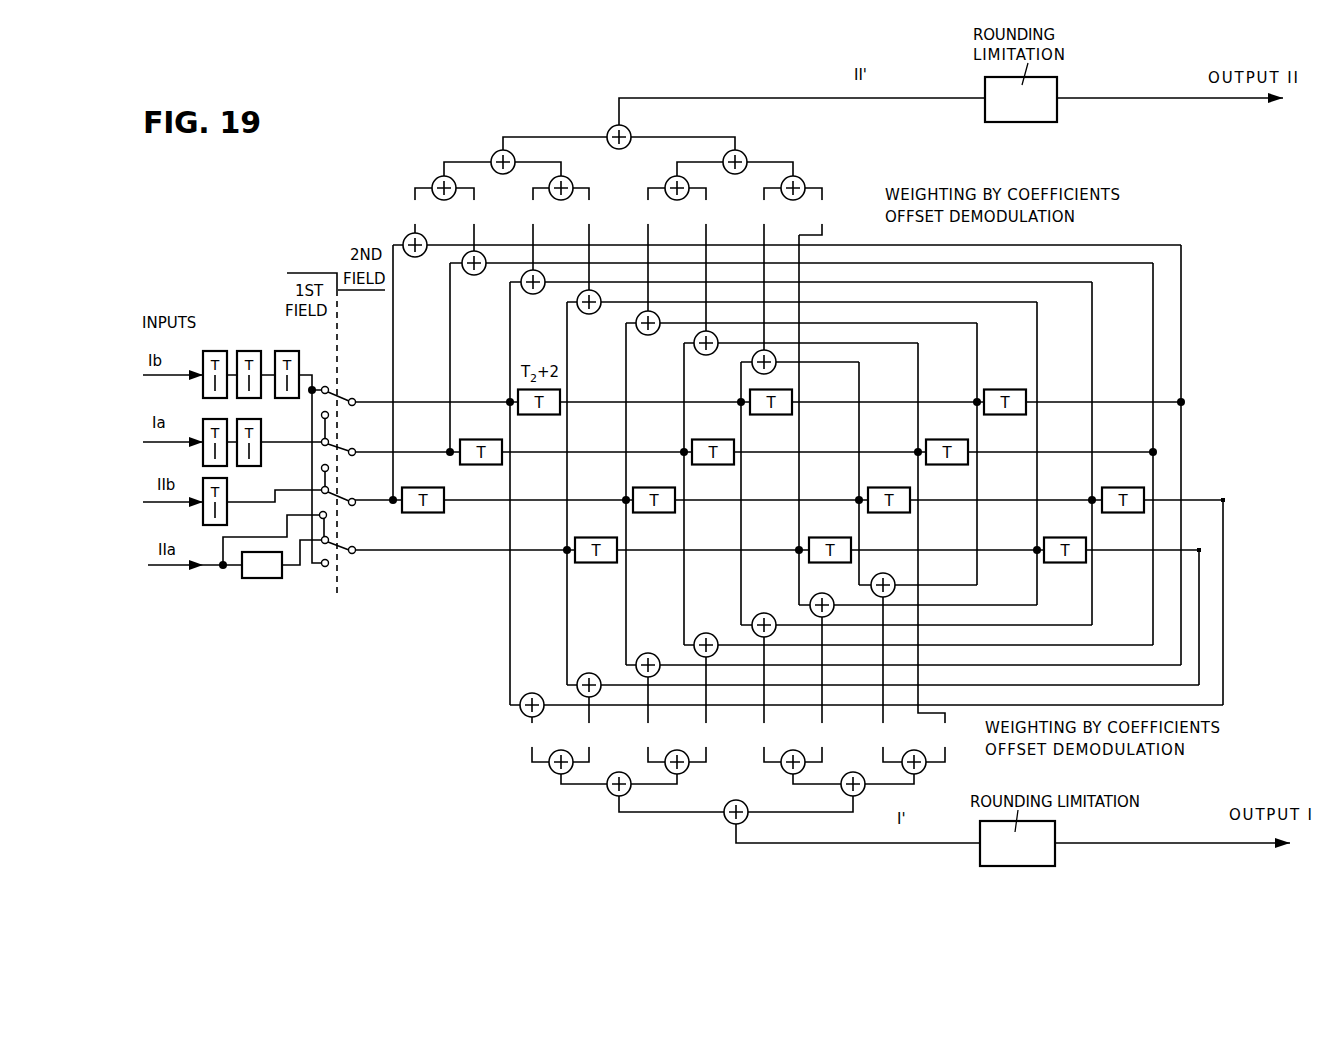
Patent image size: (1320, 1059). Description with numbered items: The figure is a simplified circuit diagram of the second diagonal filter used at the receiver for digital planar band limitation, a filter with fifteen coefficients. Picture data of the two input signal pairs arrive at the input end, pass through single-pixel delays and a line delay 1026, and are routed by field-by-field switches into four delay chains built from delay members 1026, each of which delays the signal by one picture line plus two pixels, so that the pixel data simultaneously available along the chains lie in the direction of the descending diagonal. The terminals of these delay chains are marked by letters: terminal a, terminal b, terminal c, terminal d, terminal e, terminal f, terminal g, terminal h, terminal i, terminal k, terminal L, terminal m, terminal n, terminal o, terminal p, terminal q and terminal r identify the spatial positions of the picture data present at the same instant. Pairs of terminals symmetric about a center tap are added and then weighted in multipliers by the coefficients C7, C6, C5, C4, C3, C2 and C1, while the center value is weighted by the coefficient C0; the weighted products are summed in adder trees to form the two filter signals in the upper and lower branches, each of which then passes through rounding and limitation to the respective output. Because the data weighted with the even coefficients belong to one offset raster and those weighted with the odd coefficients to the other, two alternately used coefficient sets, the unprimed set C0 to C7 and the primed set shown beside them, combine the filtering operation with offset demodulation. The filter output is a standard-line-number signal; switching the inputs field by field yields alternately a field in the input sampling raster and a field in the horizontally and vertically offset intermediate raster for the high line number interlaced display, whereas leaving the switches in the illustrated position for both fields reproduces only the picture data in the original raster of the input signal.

The delay member 1026 is at (693, 497).
The delay chain terminal a is at (381, 490).
The delay chain terminal b is at (440, 441).
The delay chain terminal c is at (502, 392).
The delay chain terminal d is at (559, 539).
The delay chain terminal e is at (617, 489).
The delay chain terminal f is at (674, 442).
The delay chain terminal g is at (733, 391).
The delay chain terminal h is at (791, 539).
The delay chain terminal i is at (853, 489).
The delay chain terminal k is at (909, 442).
The delay chain terminal L is at (968, 391).
The delay chain terminal m is at (1026, 538).
The delay chain terminal n is at (1084, 489).
The delay chain terminal o is at (1145, 442).
The delay chain terminal p is at (1173, 390).
The delay chain terminal q is at (1203, 535).
The delay chain terminal r is at (1231, 503).
The filter coefficient c7 C7 is at (455, 473).
The filter coefficient c6 C6 is at (519, 473).
The filter coefficient c5 C5 is at (577, 473).
The filter coefficient c4 C4 is at (635, 473).
The filter coefficient c3 C3 is at (693, 473).
The filter coefficient c2 C2 is at (751, 473).
The filter coefficient c1 C1 is at (811, 473).
The filter coefficient c0 C0 is at (871, 473).